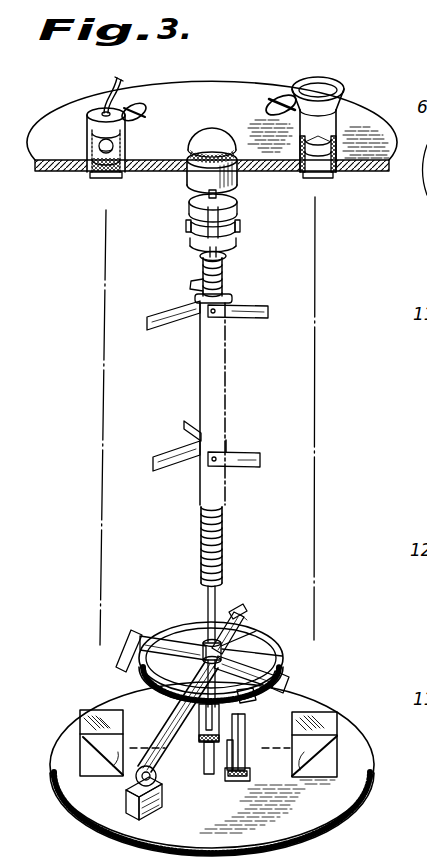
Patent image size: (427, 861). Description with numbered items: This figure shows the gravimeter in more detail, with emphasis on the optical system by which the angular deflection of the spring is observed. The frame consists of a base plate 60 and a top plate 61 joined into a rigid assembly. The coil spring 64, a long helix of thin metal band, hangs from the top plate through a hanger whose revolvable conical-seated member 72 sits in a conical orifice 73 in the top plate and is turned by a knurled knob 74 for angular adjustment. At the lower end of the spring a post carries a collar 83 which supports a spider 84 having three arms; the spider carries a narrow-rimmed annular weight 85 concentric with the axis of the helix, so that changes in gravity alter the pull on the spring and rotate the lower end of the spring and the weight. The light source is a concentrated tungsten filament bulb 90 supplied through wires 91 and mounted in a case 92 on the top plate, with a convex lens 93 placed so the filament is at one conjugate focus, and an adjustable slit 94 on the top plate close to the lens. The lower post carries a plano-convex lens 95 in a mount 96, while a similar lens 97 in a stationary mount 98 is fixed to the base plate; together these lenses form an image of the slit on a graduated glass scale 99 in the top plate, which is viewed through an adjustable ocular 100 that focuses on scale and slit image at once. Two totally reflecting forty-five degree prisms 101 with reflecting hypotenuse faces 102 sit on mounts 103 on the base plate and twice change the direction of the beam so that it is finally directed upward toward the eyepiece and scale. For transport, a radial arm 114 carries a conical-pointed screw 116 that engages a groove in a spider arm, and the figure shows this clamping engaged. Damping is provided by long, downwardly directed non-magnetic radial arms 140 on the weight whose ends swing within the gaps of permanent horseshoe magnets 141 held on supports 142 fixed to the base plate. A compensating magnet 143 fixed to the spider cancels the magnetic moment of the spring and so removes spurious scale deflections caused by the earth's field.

The base plate 60 is at (295, 836).
The top plate 61 is at (376, 143).
The coil spring 64 is at (232, 262).
The revolvable conical-seated member 72 is at (238, 182).
The conical orifice 73 is at (187, 172).
The knurled knob 74 is at (222, 128).
The collar 83 is at (205, 593).
The spider 84 is at (228, 612).
The annular weight 85 is at (263, 643).
The tungsten filament bulb 90 is at (118, 143).
The wires 91 is at (108, 98).
The case 92 is at (92, 140).
The convex lens 93 is at (124, 160).
The adjustable slit 94 is at (106, 178).
The plano-convex lens 95 is at (149, 762).
The mount 96 is at (212, 773).
The lens 97 is at (248, 726).
The stationary mount 98 is at (243, 781).
The scale 99 is at (318, 170).
The adjustable ocular 100 is at (345, 92).
The totally reflecting 45 degree prisms 101 is at (80, 717).
The reflecting hypotenuse faces 102 is at (120, 770).
The mounts 103 is at (83, 760).
The radial arm 114 is at (126, 652).
The conical-pointed screws 116 is at (258, 696).
The radial arms 140 is at (273, 657).
The permanent horseshoe magnets 141 is at (274, 666).
The supports 142 is at (152, 806).
The compensating magnet 143 is at (222, 652).